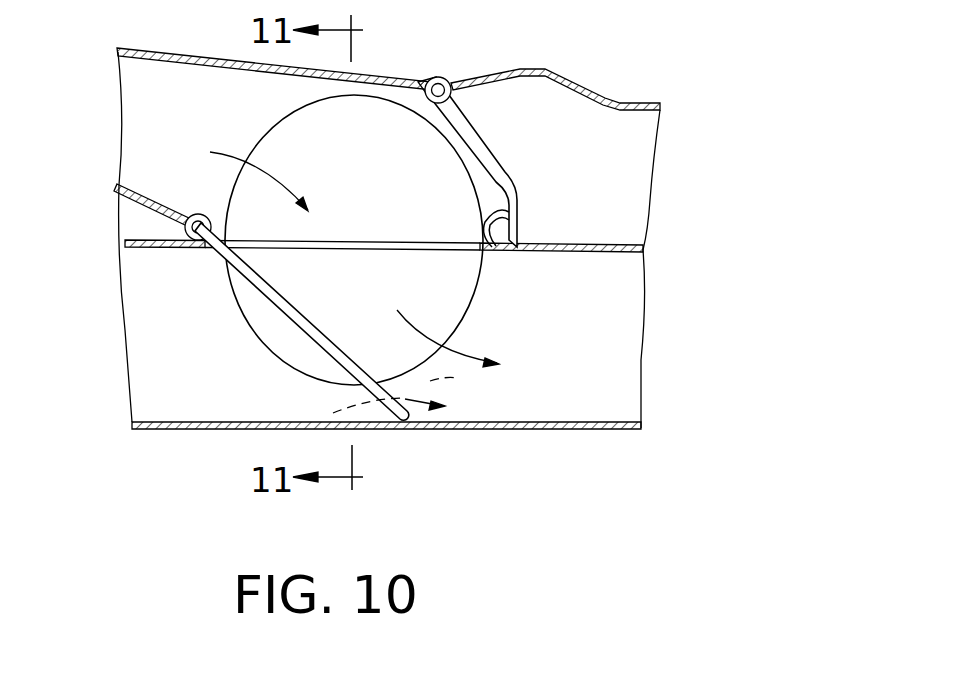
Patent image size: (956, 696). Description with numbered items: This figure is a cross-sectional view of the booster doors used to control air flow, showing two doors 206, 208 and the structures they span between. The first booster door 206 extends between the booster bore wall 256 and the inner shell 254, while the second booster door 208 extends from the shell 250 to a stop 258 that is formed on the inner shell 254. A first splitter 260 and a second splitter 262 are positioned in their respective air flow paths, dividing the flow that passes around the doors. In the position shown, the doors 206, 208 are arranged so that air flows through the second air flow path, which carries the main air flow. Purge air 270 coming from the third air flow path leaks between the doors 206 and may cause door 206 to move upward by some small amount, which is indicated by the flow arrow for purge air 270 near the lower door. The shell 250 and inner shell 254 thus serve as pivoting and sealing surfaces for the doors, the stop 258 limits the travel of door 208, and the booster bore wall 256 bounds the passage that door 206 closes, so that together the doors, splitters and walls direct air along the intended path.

The booster door 206 is at (300, 313).
The booster door 208 is at (503, 165).
The shell 250 is at (374, 78).
The inner shell 254 is at (147, 248).
The booster bore wall 256 is at (200, 430).
The stop 258 is at (493, 255).
The first splitter 260 is at (270, 130).
The second splitter 262 is at (452, 312).
The purge air 270 is at (458, 378).